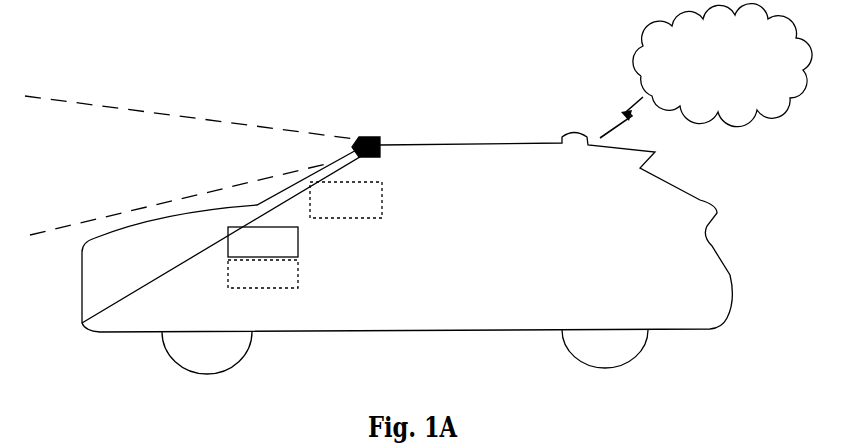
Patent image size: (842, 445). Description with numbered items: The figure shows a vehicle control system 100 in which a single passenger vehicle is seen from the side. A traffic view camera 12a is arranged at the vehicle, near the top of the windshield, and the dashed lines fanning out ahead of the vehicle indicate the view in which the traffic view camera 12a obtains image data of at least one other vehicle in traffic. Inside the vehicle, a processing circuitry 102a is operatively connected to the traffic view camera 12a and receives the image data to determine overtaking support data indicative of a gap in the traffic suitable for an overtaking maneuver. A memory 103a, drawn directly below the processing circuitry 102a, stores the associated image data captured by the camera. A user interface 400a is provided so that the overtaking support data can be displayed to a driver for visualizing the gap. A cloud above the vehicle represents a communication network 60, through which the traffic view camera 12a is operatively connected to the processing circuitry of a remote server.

The vehicle control system 100 is at (118, 71).
The traffic view camera 12a is at (351, 121).
The communication network 60 is at (706, 71).
The user interface 400a is at (346, 200).
The processing circuitry 102a is at (263, 242).
The memory 103a is at (263, 273).